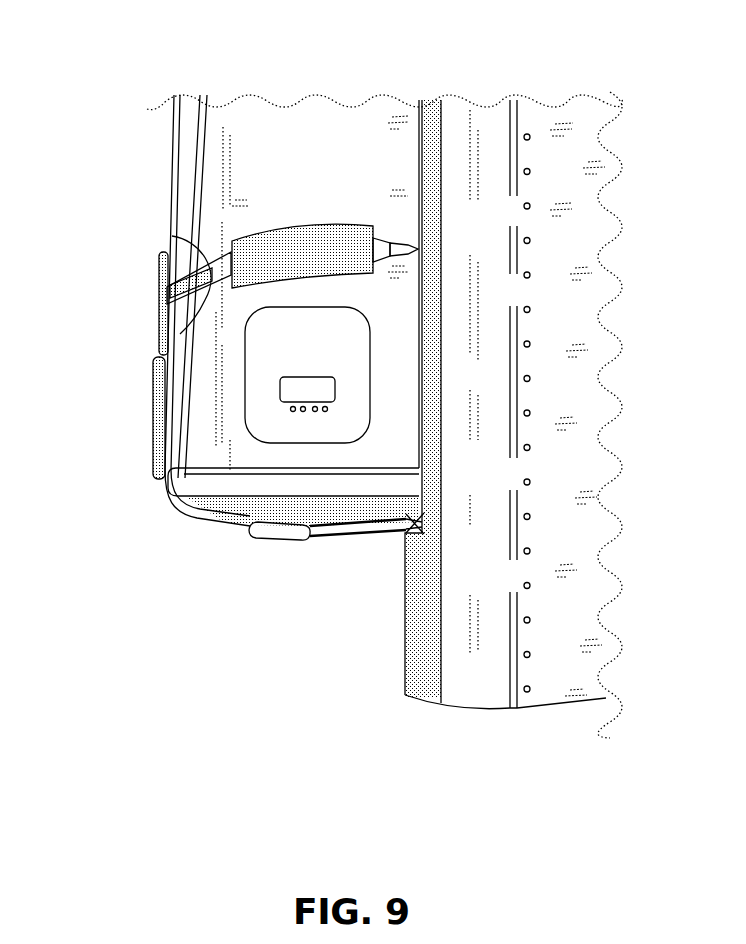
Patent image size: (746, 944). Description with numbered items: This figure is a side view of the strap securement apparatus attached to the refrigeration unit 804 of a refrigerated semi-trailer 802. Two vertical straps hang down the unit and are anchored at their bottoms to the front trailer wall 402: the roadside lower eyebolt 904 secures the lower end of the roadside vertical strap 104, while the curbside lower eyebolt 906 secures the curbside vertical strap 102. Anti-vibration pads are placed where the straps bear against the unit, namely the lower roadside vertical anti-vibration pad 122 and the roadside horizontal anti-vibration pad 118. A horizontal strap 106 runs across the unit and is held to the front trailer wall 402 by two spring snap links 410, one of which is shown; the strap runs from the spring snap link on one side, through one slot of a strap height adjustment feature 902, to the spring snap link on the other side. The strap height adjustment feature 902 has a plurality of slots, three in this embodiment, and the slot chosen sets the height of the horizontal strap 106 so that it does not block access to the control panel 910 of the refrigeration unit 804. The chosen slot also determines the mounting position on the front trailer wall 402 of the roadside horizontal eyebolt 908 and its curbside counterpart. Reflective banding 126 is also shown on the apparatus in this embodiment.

The refrigeration unit 804 is at (298, 52).
The refrigerated semi-trailer 802 is at (514, 737).
The front trailer wall 402 is at (418, 630).
The curbside vertical strap 102 is at (245, 525).
The control panel 910 is at (326, 361).
The lower roadside vertical anti-vibration pad 122 is at (148, 452).
The roadside vertical strap 104 is at (258, 520).
The curbside lower eyebolt 906 is at (406, 533).
The roadside lower eyebolt 904 is at (425, 512).
The reflective banding 126 is at (170, 245).
The strap height adjustment feature 902 is at (162, 247).
The horizontal strap 106 is at (163, 333).
The roadside horizontal anti-vibration pad 118 is at (340, 232).
The roadside horizontal eyebolt 908 is at (423, 248).
The spring snap link 410 is at (412, 233).